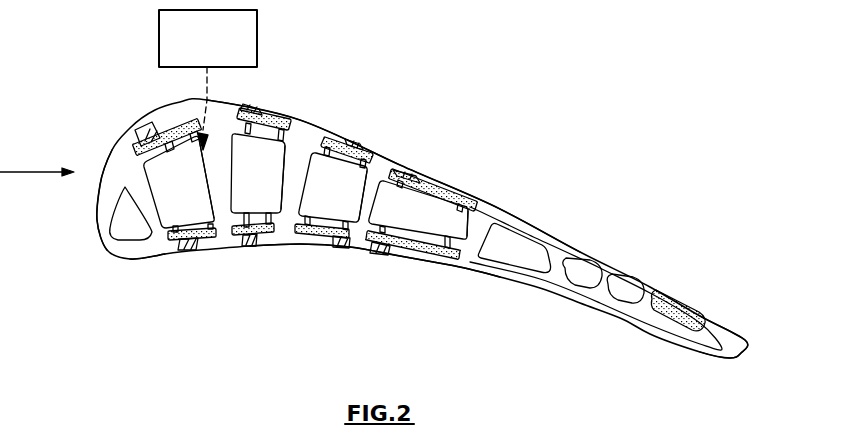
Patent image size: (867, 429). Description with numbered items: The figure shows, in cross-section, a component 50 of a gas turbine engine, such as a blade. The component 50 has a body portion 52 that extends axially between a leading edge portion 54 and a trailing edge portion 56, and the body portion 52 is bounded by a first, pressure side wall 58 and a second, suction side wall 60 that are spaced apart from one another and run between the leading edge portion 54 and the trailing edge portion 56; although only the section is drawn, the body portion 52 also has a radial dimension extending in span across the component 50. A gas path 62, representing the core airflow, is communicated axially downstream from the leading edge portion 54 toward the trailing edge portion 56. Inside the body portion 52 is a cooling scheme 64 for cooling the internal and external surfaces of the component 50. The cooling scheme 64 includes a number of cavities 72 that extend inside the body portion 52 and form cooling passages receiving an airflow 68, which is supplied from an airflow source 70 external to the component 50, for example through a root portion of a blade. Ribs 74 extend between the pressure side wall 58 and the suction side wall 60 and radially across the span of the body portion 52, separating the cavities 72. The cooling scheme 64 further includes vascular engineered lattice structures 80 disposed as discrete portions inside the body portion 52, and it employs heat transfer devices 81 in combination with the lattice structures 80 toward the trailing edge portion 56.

The component 50 is at (436, 106).
The body portion 52 is at (503, 204).
The leading edge portion 54 is at (88, 231).
The trailing edge portion 56 is at (718, 368).
The first (pressure) side wall 58 is at (286, 250).
The second (suction) side wall 60 is at (318, 114).
The gas path 62 is at (6, 172).
The cooling scheme 64 is at (156, 259).
The airflow 68 is at (210, 96).
The airflow source 70 is at (258, 40).
The cavities 72 is at (113, 230).
The ribs 74 is at (221, 187).
The vascular engineered lattice structures 80 is at (162, 128).
The heat transfer devices 81 is at (611, 268).